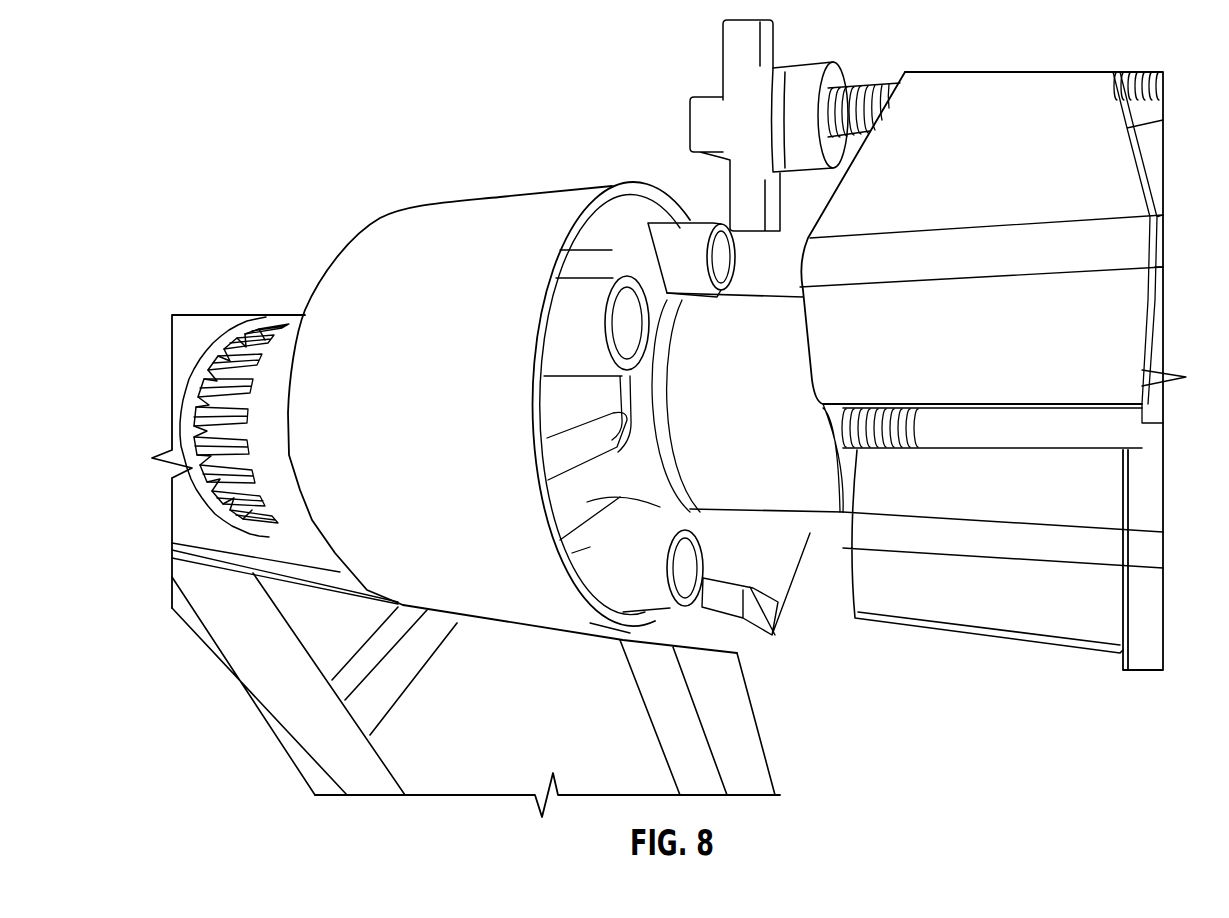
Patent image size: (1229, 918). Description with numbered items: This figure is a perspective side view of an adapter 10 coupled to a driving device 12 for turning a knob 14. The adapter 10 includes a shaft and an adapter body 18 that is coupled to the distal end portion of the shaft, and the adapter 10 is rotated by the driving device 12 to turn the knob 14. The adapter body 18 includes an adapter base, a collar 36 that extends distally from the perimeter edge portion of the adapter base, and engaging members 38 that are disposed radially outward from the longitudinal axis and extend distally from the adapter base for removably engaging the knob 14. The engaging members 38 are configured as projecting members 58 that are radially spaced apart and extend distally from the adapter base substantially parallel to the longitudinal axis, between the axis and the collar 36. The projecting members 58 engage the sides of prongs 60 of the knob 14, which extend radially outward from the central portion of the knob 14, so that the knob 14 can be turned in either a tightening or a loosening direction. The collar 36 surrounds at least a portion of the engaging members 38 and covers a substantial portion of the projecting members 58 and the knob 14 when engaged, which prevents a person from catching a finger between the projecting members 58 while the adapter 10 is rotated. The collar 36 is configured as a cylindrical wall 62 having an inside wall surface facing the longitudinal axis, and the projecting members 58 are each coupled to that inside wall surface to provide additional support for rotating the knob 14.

The adapter 10 is at (520, 595).
The driving device 12 is at (233, 345).
The knob 14 is at (780, 507).
The adapter body 18 is at (562, 608).
The collar 36 is at (385, 533).
The engaging member 38 is at (677, 240).
The projecting member 58 is at (565, 308).
The prong 60 is at (607, 198).
The cylindrical wall 62 is at (432, 575).